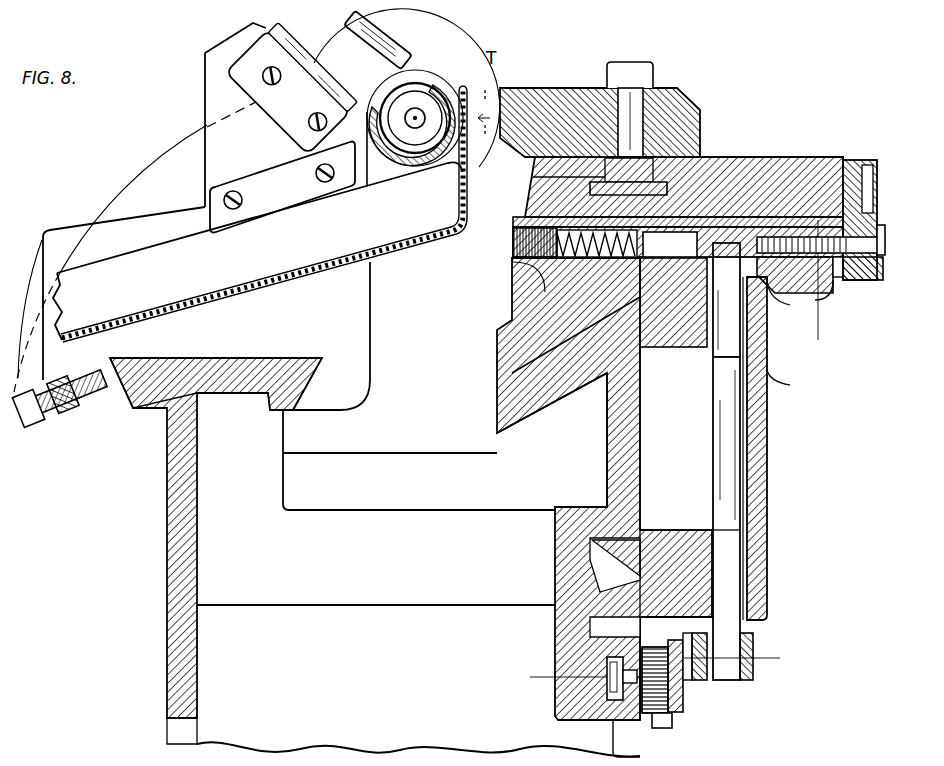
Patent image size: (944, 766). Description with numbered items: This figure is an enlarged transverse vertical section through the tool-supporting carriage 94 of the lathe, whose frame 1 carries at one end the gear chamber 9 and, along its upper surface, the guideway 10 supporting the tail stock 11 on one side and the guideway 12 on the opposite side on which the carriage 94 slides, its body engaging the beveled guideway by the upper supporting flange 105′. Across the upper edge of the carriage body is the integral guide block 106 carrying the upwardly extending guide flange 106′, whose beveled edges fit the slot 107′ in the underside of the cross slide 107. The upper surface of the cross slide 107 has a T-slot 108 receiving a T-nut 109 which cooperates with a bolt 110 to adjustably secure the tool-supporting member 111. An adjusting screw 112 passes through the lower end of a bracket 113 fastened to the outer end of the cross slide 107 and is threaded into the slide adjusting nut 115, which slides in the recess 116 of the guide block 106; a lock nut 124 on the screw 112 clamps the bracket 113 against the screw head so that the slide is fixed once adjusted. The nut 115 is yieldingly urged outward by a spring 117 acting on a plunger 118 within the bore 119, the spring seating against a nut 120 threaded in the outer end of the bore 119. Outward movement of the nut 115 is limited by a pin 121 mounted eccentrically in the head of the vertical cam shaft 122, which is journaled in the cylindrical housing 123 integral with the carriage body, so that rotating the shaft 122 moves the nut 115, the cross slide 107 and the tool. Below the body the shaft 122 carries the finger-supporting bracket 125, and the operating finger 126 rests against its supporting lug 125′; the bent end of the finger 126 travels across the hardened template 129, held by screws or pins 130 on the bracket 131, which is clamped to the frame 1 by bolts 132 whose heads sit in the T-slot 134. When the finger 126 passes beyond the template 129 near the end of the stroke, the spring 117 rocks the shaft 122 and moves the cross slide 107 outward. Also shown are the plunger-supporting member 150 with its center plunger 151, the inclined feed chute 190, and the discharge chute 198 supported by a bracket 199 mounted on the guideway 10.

The frame 1 is at (207, 543).
The gear chamber 9 is at (653, 675).
The guideway 10 is at (200, 358).
The tail stock 11 is at (168, 163).
The guideway 12 is at (620, 456).
The tool carriage 94 is at (764, 383).
The upper supporting flange 105′ is at (540, 330).
The guide block 106 is at (812, 298).
The guide flange 106′ is at (527, 214).
The cross slide 107 is at (783, 210).
The slot 107′ is at (750, 210).
The T-slot 108 is at (703, 160).
The T-nut 109 is at (533, 177).
The bolt 110 is at (633, 114).
The tool-supporting member 111 is at (566, 88).
The adjusting screw 112 is at (836, 280).
The bracket 113 is at (860, 163).
The slide adjusting nut 115 is at (795, 205).
The recess 116 is at (688, 268).
The spring 117 is at (517, 278).
The plunger 118 is at (670, 244).
The bore 119 is at (540, 290).
The nut 120 is at (517, 253).
The pin 121 is at (707, 283).
The cam shaft 122 is at (727, 452).
The cylindrical housing 123 is at (768, 502).
The lock nut 124 is at (850, 278).
The finger-supporting bracket 125 is at (755, 655).
The supporting lug 125′ is at (692, 680).
The operating finger 126 is at (730, 682).
The template 129 is at (648, 655).
The screws or pins 130 is at (666, 728).
The bracket 131 is at (683, 708).
The bolts 132 is at (607, 690).
The T-slot 134 is at (595, 722).
The plunger-supporting member 150 is at (425, 108).
The center plunger 151 is at (418, 108).
The inclined chute 190 is at (360, 22).
The chute 198 is at (381, 240).
The bracket 199 is at (68, 422).